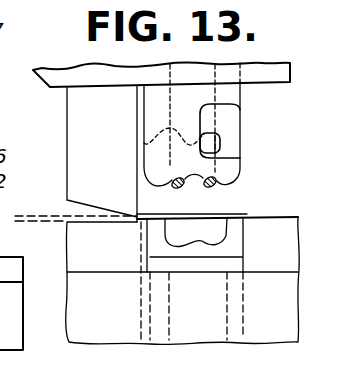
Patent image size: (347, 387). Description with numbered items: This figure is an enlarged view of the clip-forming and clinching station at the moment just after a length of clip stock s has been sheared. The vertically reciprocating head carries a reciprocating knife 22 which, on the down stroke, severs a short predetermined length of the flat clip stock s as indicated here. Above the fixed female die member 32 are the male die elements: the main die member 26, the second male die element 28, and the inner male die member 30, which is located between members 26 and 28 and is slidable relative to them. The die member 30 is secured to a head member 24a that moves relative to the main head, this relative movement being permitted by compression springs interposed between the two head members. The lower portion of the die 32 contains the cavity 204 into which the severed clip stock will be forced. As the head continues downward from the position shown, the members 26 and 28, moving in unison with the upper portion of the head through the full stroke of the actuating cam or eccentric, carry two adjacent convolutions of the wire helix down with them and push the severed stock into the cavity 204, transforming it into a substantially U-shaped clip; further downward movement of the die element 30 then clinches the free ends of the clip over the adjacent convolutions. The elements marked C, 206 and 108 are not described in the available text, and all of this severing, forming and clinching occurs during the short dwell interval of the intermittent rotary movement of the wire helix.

The head member 24a is at (82, 77).
The reciprocating knife 22 is at (86, 205).
The clip stock S is at (245, 213).
The lower block / anvil 108 is at (79, 345).
The fixed female die member 32 is at (232, 230).
The cavity 204 is at (173, 228).
The main die member 26 is at (232, 168).
The contact pads C is at (208, 187).
The hidden passage 206 is at (174, 163).
The male die element 28 is at (233, 116).
The inner male die member 30 is at (213, 145).